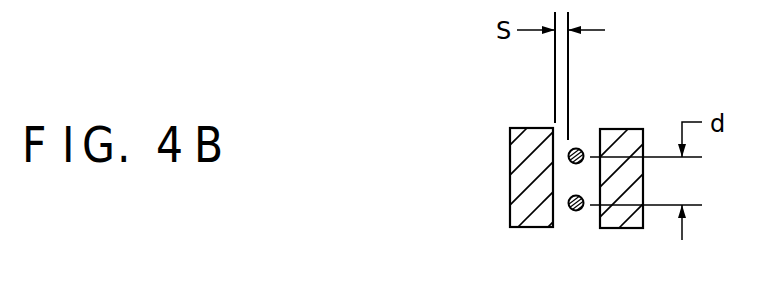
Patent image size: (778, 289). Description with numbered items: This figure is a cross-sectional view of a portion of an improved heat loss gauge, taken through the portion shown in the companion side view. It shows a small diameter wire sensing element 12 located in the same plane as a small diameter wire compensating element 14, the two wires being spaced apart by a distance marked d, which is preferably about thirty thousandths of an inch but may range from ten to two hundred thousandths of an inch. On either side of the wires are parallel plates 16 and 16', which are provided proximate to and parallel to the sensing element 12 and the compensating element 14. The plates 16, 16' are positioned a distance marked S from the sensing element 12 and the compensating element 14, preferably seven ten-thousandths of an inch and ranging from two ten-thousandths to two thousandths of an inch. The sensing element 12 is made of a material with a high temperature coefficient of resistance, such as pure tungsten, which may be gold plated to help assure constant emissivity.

The sensing element 12 is at (578, 149).
The compensating element 14 is at (576, 211).
The parallel plate 16 is at (625, 169).
The parallel plate 16' is at (522, 180).